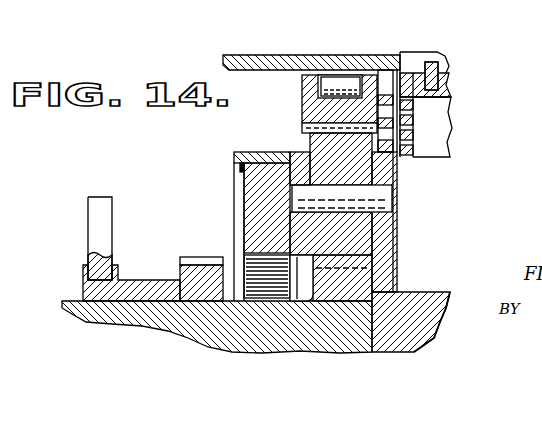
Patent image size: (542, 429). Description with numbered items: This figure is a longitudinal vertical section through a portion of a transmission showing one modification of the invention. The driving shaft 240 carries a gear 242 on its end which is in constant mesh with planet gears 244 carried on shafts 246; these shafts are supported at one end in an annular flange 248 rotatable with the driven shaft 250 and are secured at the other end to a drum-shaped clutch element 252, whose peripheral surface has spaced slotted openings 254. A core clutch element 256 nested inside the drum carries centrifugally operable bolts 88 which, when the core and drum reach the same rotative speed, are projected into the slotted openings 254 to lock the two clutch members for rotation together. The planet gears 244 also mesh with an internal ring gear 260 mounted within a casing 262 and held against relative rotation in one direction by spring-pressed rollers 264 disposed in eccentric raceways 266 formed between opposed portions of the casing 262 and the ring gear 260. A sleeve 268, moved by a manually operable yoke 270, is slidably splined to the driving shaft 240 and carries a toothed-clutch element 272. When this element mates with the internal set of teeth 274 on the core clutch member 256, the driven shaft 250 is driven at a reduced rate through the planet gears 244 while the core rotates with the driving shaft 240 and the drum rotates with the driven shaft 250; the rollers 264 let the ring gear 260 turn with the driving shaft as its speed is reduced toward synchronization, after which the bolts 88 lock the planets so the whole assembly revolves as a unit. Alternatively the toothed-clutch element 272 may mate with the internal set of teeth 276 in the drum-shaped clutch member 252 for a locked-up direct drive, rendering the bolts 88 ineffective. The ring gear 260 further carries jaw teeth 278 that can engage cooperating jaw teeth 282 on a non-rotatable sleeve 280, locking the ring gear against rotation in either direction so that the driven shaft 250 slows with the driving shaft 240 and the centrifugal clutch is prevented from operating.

The centrifugally operable bolts 88 is at (243, 198).
The driving shaft 240 is at (221, 342).
The gear 242 is at (380, 261).
The planet gears 244 is at (383, 230).
The shafts 246 is at (393, 195).
The annular flange 248 is at (383, 285).
The driven shaft 250 is at (403, 345).
The drum-shaped clutch element 252 is at (234, 157).
The slotted openings 254 is at (270, 141).
The core clutch element 256 is at (248, 232).
The internal ring gear 260 is at (372, 74).
The casing 262 is at (250, 63).
The spring-pressed rollers 264 is at (337, 82).
The eccentric raceways 266 is at (318, 88).
The sleeve 268 is at (140, 301).
The manually operable yoke 270 is at (93, 227).
The toothed-clutch element 272 is at (197, 275).
The internal set of teeth 274 is at (256, 256).
The internal set of teeth 276 is at (298, 262).
The jaw teeth 278 is at (402, 56).
The non-rotatable sleeve 280 is at (450, 88).
The jaw teeth 282 is at (415, 122).